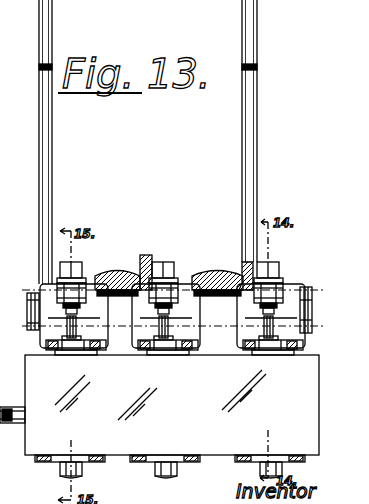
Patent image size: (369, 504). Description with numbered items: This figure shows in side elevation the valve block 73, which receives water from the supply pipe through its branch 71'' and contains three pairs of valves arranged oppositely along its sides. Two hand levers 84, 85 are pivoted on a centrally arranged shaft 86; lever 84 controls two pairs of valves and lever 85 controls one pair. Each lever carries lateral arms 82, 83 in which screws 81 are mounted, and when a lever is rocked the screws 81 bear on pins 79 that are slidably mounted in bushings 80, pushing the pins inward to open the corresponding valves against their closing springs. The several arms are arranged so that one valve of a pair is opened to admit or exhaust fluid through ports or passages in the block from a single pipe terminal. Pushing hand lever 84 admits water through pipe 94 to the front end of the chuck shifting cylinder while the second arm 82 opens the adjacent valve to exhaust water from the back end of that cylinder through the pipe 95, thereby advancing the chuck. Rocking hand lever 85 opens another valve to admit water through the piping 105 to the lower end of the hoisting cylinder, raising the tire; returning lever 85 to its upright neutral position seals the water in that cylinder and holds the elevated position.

The hand lever 85 is at (52, 170).
The hand lever 84 is at (255, 163).
The lateral arm 83 is at (39, 288).
The shaft 86 is at (308, 305).
The lateral arm 82 is at (246, 300).
The screw 81 is at (84, 267).
The pin 79 is at (76, 320).
The bushing 80 is at (68, 345).
The valve block 73 is at (172, 405).
The branch 71'' is at (12, 431).
The piping 105 is at (82, 467).
The pipe 95 is at (177, 467).
The pipe 94 is at (283, 466).